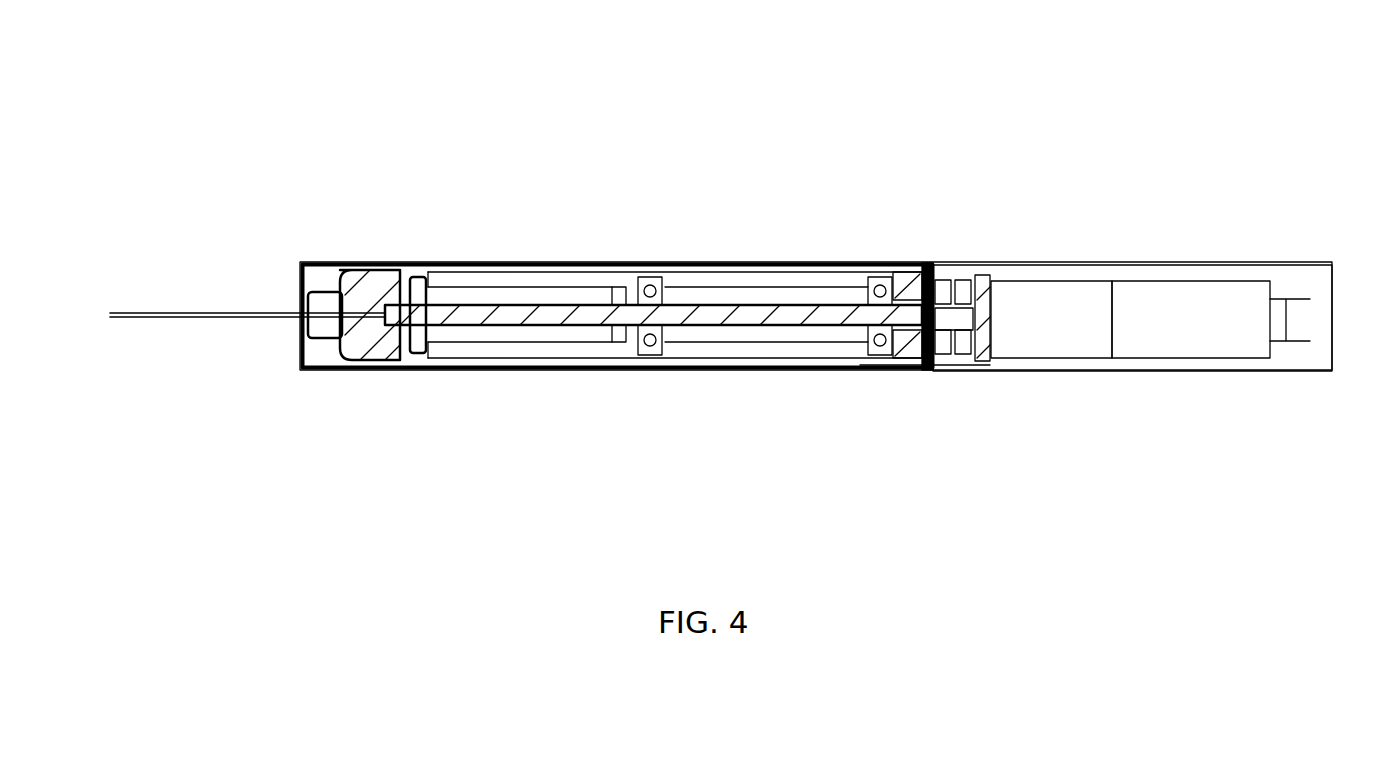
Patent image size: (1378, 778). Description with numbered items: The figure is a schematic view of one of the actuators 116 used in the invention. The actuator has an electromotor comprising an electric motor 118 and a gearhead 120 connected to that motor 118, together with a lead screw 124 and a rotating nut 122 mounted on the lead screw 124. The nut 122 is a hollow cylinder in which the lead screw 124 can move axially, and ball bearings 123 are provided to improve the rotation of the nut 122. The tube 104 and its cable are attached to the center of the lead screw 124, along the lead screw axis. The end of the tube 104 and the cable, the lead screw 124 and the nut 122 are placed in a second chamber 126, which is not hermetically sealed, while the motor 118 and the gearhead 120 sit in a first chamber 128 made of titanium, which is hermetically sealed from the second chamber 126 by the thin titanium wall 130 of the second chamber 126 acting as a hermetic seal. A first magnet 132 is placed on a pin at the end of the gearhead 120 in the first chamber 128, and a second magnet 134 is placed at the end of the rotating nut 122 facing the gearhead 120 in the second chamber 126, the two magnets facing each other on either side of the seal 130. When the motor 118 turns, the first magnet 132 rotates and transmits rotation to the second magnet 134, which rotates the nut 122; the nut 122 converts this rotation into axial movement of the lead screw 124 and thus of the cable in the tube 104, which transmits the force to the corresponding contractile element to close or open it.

The tube 104 is at (190, 322).
The actuator 116 is at (742, 193).
The electric motor 118 is at (1172, 326).
The gearhead 120 is at (1052, 322).
The rotating nut 122 is at (791, 296).
The ball bearings 123 is at (650, 352).
The lead screw 124 is at (492, 326).
The second chamber 126 is at (496, 262).
The first chamber 128 is at (1134, 264).
The thin titanium wall 130 is at (936, 264).
The first magnet 132 is at (950, 370).
The second magnet 134 is at (906, 371).